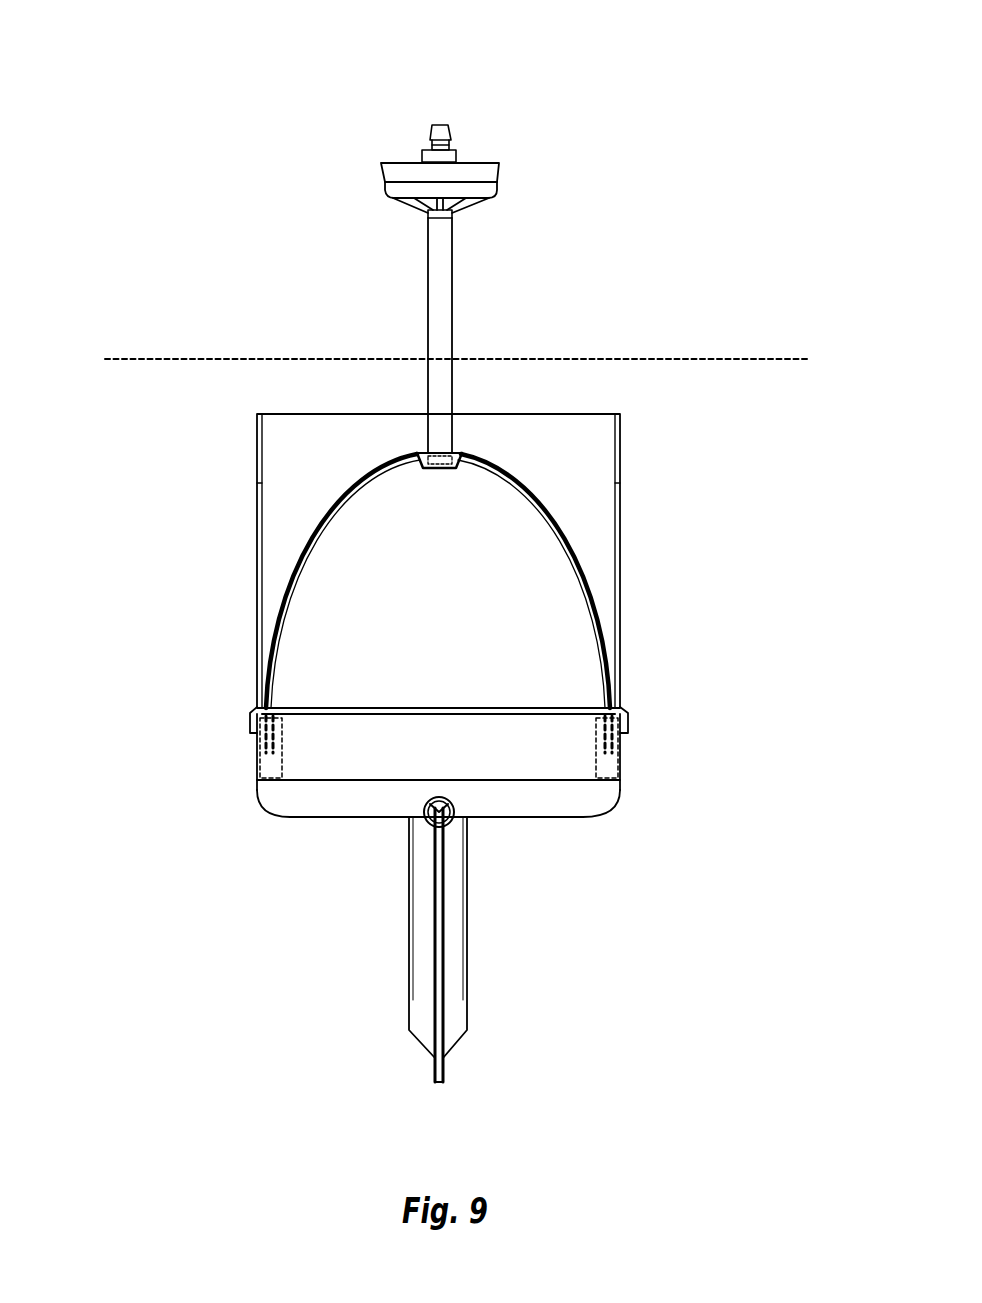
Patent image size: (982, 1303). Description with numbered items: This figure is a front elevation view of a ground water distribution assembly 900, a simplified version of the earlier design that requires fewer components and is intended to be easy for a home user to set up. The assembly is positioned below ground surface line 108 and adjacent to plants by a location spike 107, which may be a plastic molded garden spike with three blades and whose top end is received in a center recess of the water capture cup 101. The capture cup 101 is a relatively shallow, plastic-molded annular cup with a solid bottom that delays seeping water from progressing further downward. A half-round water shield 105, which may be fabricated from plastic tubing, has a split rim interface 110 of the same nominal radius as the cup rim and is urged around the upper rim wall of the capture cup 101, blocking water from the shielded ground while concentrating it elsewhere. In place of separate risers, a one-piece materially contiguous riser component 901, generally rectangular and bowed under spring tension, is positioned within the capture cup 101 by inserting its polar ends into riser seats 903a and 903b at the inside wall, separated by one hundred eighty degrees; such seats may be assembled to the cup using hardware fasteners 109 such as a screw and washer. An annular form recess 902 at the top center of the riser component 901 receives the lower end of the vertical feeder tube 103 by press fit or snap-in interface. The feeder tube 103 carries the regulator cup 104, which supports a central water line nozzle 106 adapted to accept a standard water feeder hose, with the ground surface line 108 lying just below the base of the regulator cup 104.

The ground water distribution assembly 900 is at (600, 146).
The water line nozzle 106 is at (442, 120).
The regulator cup 104 is at (385, 188).
The vertical feeder tube 103 is at (452, 317).
The ground surface line 108 is at (188, 358).
The half-round water shield 105 is at (622, 520).
The riser component 901 is at (600, 657).
The form recess 902 is at (440, 470).
The split rim interface 110 is at (250, 720).
The water capture cup 101 is at (257, 778).
The riser seat 903a is at (282, 752).
The riser seat 903b is at (598, 758).
The hardware fastener 109 is at (455, 812).
The location spike 107 is at (409, 1000).